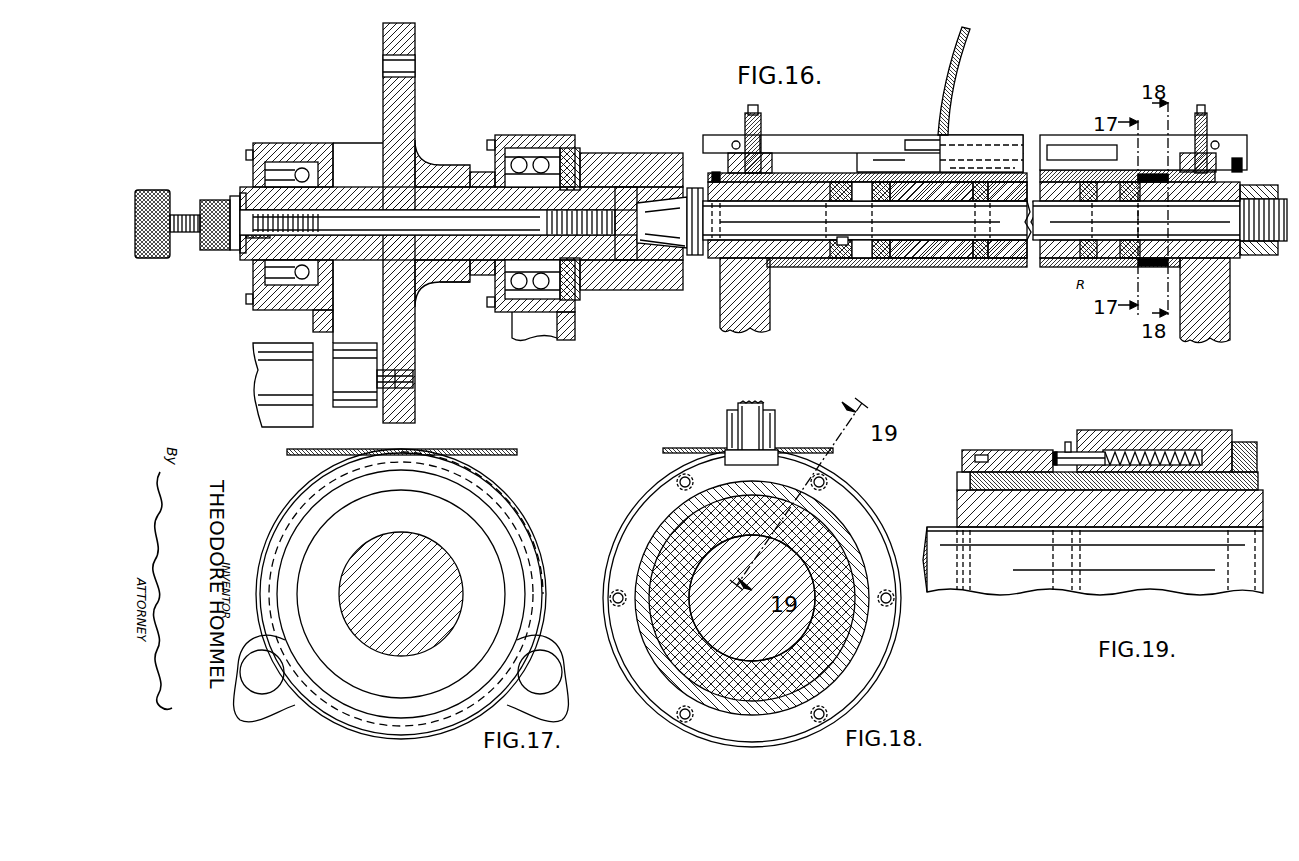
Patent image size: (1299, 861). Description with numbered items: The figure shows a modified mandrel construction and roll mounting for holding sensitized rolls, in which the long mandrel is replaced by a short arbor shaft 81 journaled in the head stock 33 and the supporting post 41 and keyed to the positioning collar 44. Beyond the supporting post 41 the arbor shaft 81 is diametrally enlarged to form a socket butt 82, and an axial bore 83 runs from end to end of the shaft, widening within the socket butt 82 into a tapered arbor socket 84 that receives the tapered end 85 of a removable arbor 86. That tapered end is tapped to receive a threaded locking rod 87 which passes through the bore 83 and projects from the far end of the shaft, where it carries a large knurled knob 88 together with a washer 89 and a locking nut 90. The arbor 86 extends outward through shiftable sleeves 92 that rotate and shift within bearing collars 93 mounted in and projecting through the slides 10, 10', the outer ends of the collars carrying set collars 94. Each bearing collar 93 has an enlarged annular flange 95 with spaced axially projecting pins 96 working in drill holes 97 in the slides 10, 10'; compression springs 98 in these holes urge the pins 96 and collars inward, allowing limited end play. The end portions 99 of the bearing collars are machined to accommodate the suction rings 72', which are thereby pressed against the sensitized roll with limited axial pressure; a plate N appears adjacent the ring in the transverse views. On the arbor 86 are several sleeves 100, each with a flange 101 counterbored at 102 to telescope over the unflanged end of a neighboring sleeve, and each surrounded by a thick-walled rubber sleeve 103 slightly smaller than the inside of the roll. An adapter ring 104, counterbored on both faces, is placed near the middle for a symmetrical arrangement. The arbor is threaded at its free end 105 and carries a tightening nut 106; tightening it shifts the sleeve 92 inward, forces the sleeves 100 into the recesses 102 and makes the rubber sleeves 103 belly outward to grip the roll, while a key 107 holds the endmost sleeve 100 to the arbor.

In FIG. 16, the knurled knob 88 is at (147, 190).
In FIG. 16, the locking nut 90 is at (236, 198).
In FIG. 16, the washer 89 is at (243, 256).
In FIG. 16, the head stock 33 is at (298, 148).
In FIG. 16, the axial bore 83 is at (352, 198).
In FIG. 16, the positioning collar 44 is at (416, 110).
In FIG. 16, the arbor shaft 81 is at (440, 172).
In FIG. 16, the threaded locking rod 87 is at (455, 262).
In FIG. 16, the supporting post 41 is at (532, 138).
In FIG. 16, the socket butt 82 is at (620, 152).
In FIG. 16, the tapered arbor socket 84 is at (650, 200).
In FIG. 16, the tapered end 85 is at (668, 248).
In FIG. 16, the removable arbor 86 is at (810, 240).
In FIG. 17, the removable arbor 86 is at (455, 582).
In FIG. 18, the removable arbor 86 is at (790, 628).
In FIG. 19, the removable arbor 86 is at (1255, 540).
In FIG. 16, the shiftable sleeve 92 is at (712, 262).
In FIG. 17, the shiftable sleeve 92 is at (414, 516).
In FIG. 18, the shiftable sleeve 92 is at (845, 617).
In FIG. 19, the shiftable sleeve 92 is at (1250, 508).
In FIG. 16, the bearing collar 93 is at (720, 270).
In FIG. 17, the bearing collar 93 is at (460, 500).
In FIG. 18, the bearing collar 93 is at (855, 545).
In FIG. 19, the bearing collar 93 is at (1258, 480).
In FIG. 16, the set collar 94 is at (714, 178).
In FIG. 19, the set collar 94 is at (1255, 445).
In FIG. 16, the slide 10 is at (745, 306).
In FIG. 16, the slide 10' is at (1224, 300).
In FIG. 19, the slide 10' is at (1157, 433).
In FIG. 16, the sleeve 100 is at (865, 262).
In FIG. 16, the flange 101 is at (905, 262).
In FIG. 16, the counterbore 102 is at (880, 260).
In FIG. 16, the rubber sleeve 103 is at (958, 262).
In FIG. 16, the adapter ring 104 is at (995, 262).
In FIG. 16, the threaded free end 105 is at (1262, 255).
In FIG. 16, the tightening nut 106 is at (1262, 192).
In FIG. 16, the key 107 is at (842, 262).
In FIG. 16, the suction ring 72' is at (1153, 233).
In FIG. 17, the suction ring 72' is at (484, 523).
In FIG. 19, the suction ring 72' is at (1007, 444).
In FIG. 17, the plate N is at (510, 448).
In FIG. 18, the plate N is at (688, 447).
In FIG. 18, the annular flange 95 is at (862, 520).
In FIG. 19, the annular flange 95 is at (1068, 442).
In FIG. 18, the pin 96 is at (828, 480).
In FIG. 19, the pin 96 is at (1090, 450).
In FIG. 19, the drill hole 97 is at (1182, 450).
In FIG. 19, the compression spring 98 is at (1138, 450).
In FIG. 19, the end portion 99 is at (958, 482).